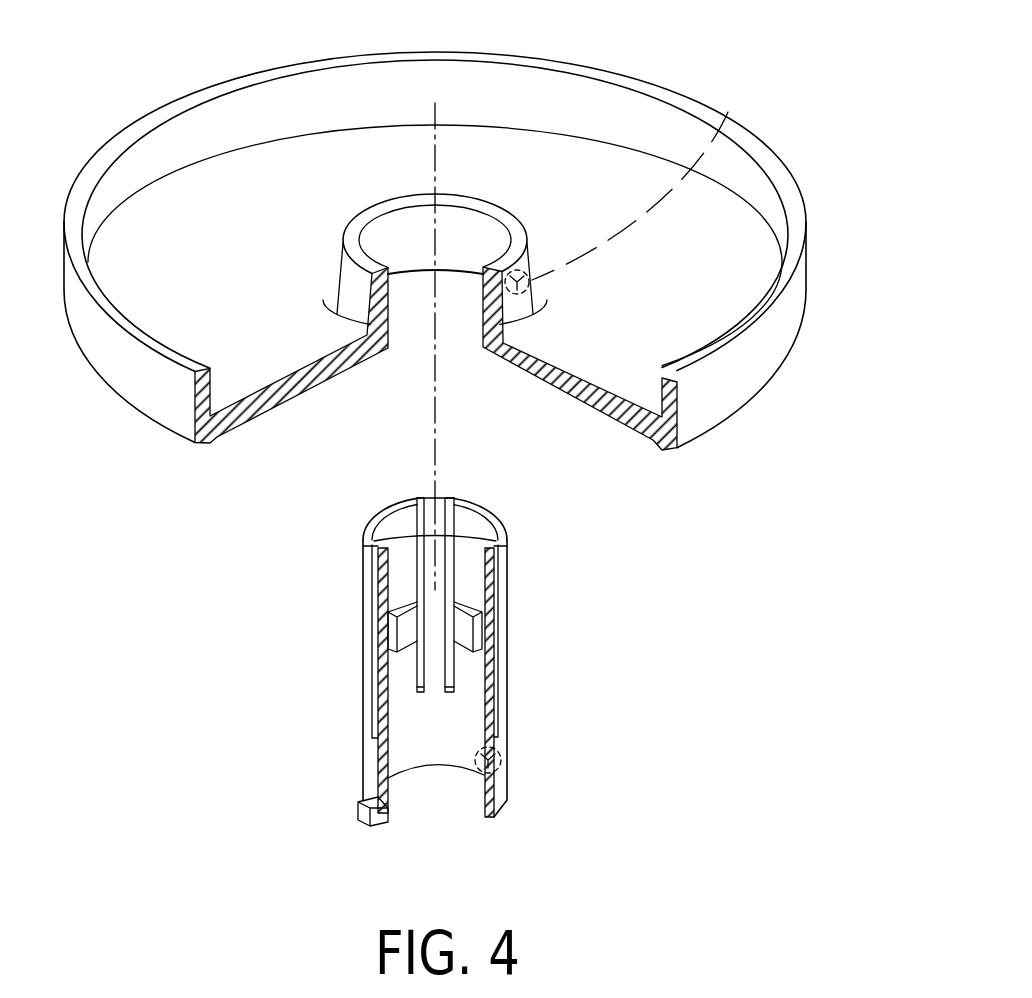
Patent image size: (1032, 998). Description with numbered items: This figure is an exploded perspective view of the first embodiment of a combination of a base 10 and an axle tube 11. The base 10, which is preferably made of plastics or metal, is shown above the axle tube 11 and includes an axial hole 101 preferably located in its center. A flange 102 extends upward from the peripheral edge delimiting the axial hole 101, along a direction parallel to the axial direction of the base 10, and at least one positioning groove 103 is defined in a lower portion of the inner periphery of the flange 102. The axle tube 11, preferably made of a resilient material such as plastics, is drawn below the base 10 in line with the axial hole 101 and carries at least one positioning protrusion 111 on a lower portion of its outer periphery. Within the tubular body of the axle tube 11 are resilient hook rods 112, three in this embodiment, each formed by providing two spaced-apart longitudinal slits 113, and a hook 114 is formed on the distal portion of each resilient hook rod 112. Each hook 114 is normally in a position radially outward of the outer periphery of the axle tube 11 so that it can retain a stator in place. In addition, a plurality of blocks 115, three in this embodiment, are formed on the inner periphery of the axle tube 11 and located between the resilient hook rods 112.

The base 10 is at (476, 239).
The axial hole 101 is at (412, 348).
The flange 102 is at (462, 222).
The positioning groove 103 is at (742, 98).
The axle tube 11 is at (448, 668).
The positioning protrusion 111 is at (358, 810).
The resilient hook rod 112 is at (500, 662).
The longitudinal slit 113 is at (418, 539).
The hook 114 is at (493, 566).
The block 115 is at (405, 630).